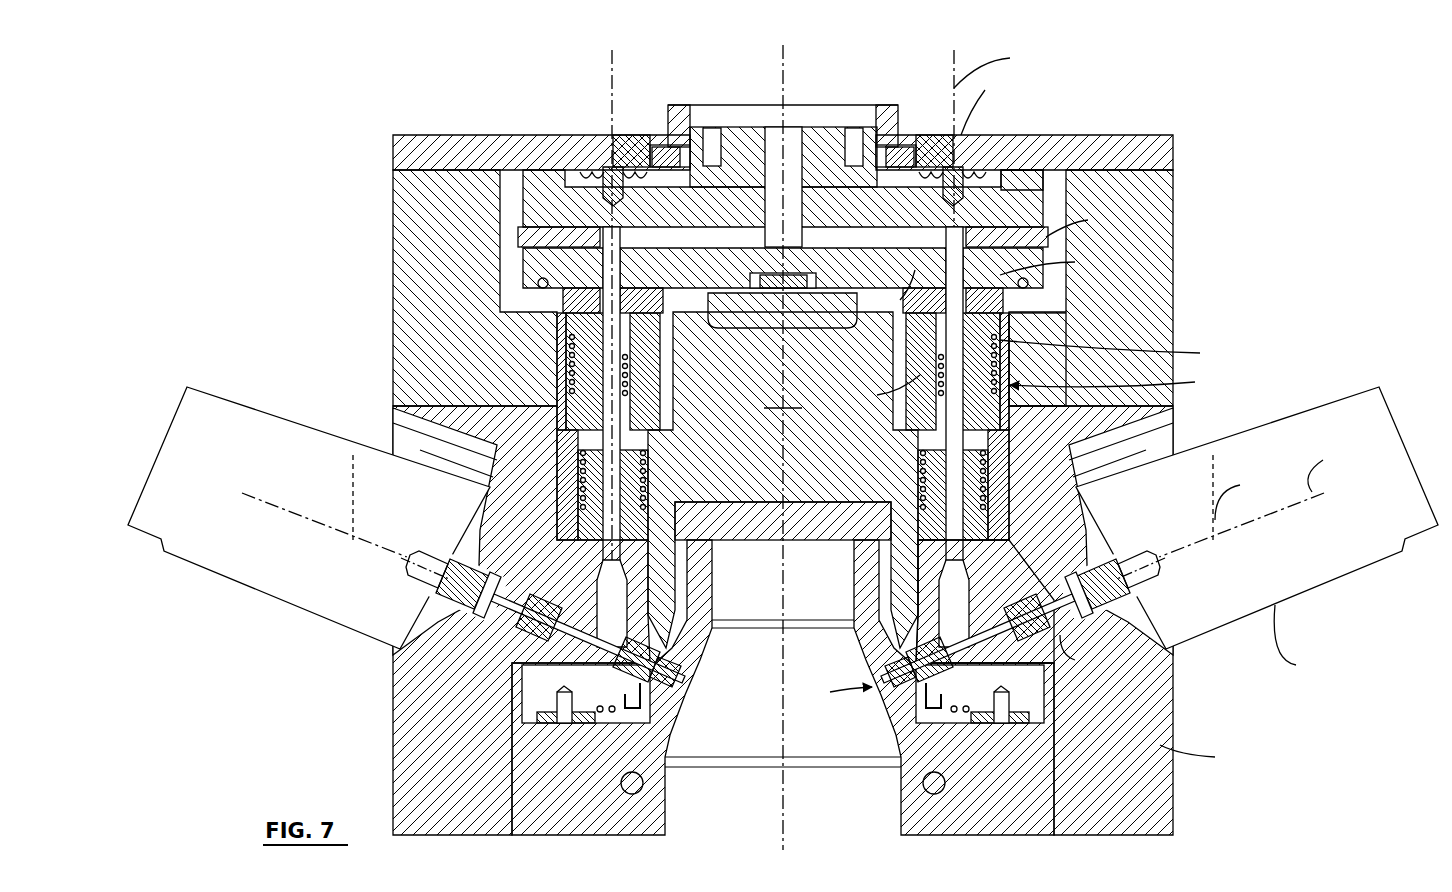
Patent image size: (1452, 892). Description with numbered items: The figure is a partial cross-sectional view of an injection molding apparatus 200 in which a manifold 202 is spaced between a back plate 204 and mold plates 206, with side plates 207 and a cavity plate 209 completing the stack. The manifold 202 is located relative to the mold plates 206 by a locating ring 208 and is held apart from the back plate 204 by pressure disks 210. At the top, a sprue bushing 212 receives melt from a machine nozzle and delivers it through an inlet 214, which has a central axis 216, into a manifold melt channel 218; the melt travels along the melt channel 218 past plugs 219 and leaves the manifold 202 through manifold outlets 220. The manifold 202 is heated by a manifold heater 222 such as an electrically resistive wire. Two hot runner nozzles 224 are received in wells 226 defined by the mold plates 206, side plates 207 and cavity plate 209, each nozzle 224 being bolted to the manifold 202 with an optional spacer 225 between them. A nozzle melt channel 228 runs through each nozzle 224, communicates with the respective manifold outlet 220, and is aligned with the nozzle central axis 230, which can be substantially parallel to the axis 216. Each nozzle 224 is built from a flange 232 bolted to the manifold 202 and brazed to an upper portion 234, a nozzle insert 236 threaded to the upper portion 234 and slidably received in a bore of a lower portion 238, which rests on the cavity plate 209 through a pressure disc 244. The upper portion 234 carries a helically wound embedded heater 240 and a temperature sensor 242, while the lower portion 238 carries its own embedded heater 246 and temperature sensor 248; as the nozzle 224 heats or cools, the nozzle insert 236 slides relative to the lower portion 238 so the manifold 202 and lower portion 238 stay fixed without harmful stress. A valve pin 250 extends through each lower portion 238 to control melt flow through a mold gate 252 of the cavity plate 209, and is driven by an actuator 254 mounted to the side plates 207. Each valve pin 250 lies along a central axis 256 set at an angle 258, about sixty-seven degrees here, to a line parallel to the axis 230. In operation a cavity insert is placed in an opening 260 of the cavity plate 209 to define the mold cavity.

The injection molding apparatus 200 is at (783, 440).
The manifold 202 is at (1022, 195).
The back plate 204 is at (1158, 150).
The mold plate 206 is at (1160, 245).
The side plates 207 is at (400, 738).
The locating ring 208 is at (808, 328).
The cavity plate 209 is at (912, 812).
The pressure disks 210 is at (605, 135).
The sprue bushing 212 is at (800, 144).
The inlet 214 is at (768, 170).
The central axis 216 is at (770, 103).
The manifold melt channel 218 is at (905, 235).
The plugs 219 is at (520, 237).
The manifold outlets 220 is at (625, 292).
The manifold heater 222 is at (1028, 286).
The hot runner nozzles 224 is at (557, 385).
The spacer 225 is at (545, 300).
The wells 226 is at (570, 345).
The nozzle melt channel 228 is at (630, 370).
The central axis 230 is at (614, 88).
The flange 232 is at (1012, 345).
The upper portion 234 is at (940, 430).
The nozzle insert 236 is at (917, 527).
The lower portion 238 is at (1025, 690).
The embedded heater 240 is at (925, 462).
The temperature sensor 242 is at (992, 478).
The pressure disc 244 is at (1012, 722).
The embedded heater 246 is at (953, 715).
The temperature sensor 248 is at (917, 710).
The valve pin 250 is at (503, 633).
The mold gate 252 is at (692, 684).
The actuators 254 is at (290, 600).
The central axis 256 is at (255, 493).
The angle 258 is at (353, 520).
The opening 260 is at (720, 748).